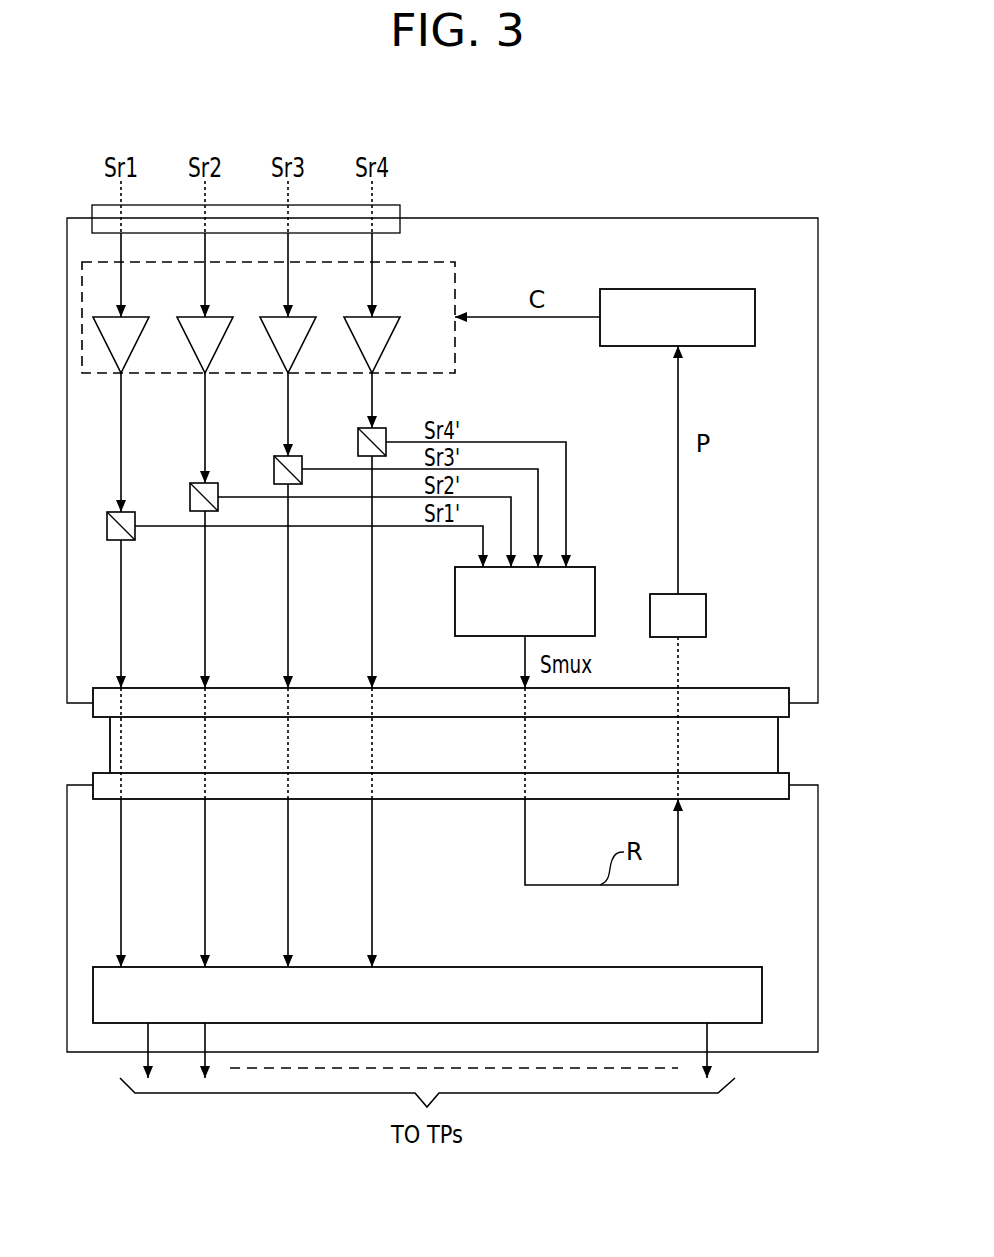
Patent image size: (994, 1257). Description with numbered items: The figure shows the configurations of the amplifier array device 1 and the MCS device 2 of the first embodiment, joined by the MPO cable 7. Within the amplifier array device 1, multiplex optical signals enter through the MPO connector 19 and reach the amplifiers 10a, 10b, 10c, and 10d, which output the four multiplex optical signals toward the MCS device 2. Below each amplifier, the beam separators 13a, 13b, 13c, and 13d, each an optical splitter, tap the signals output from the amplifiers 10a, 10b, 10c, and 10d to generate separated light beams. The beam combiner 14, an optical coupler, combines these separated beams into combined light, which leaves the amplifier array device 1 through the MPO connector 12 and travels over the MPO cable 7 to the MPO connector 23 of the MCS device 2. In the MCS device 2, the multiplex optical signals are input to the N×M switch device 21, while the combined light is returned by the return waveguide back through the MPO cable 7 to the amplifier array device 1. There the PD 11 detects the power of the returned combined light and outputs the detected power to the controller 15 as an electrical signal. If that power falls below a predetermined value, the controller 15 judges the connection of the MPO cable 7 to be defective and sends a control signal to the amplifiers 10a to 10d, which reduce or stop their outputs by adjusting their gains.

The amplifier array device 1 is at (818, 238).
The MCS device 2 is at (818, 808).
The MPO cable 7 is at (110, 745).
The amplifier 10a is at (130, 317).
The amplifier 10b is at (214, 317).
The amplifier 10c is at (297, 317).
The amplifier 10d is at (381, 317).
The PD 11 is at (700, 594).
The MPO connector 12 is at (772, 688).
The beam separator 13a is at (130, 512).
The beam separator 13b is at (213, 483).
The beam separator 13c is at (297, 456).
The beam separator 13d is at (381, 428).
The beam combiner 14 is at (588, 567).
The controller 15 is at (738, 289).
The MPO connector 19 is at (392, 205).
The N×M switch device 21 is at (740, 967).
The MPO connector 23 is at (789, 773).